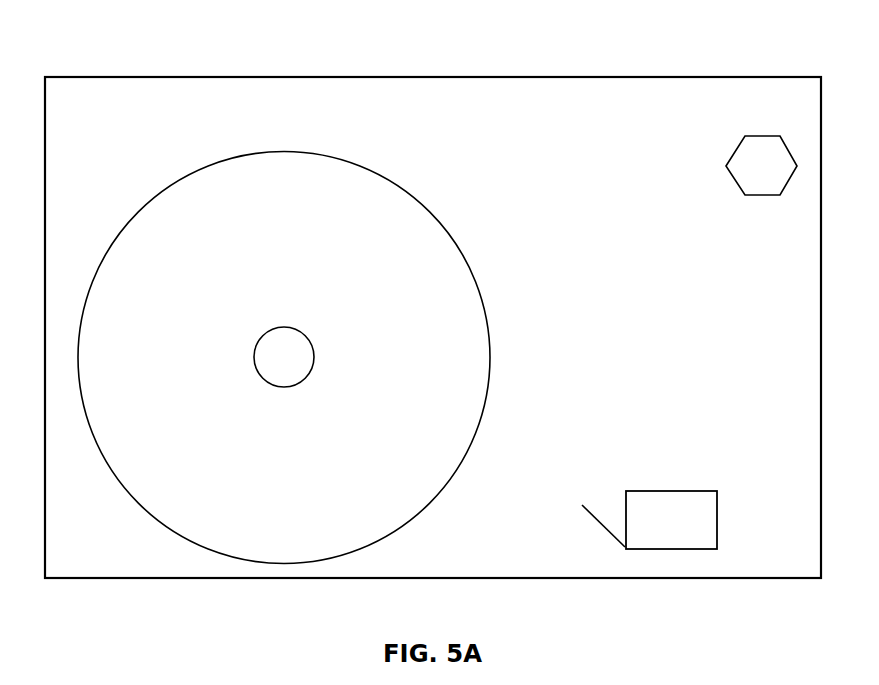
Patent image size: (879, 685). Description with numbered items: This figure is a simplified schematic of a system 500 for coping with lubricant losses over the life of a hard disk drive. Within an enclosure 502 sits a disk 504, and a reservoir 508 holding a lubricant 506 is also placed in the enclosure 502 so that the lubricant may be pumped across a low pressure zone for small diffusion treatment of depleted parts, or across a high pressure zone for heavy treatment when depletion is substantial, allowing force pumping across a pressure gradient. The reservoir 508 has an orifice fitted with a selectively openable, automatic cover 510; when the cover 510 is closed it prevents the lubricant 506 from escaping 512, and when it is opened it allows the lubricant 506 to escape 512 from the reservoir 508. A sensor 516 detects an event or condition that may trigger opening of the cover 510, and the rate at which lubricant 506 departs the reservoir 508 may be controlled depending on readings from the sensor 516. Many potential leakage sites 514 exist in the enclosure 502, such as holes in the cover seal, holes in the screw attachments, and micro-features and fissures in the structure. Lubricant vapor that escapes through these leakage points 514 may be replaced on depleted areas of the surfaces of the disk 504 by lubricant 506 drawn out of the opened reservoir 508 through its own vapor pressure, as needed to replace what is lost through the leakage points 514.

The system 500 is at (481, 58).
The enclosure 502 is at (228, 77).
The disk 504 is at (405, 427).
The lubricant 506 is at (687, 537).
The reservoir 508 is at (717, 538).
The selectively openable cover 510 is at (612, 547).
The escape of lubricant 512 is at (626, 518).
The leakage sites 514 is at (376, 43).
The sensor 516 is at (779, 176).